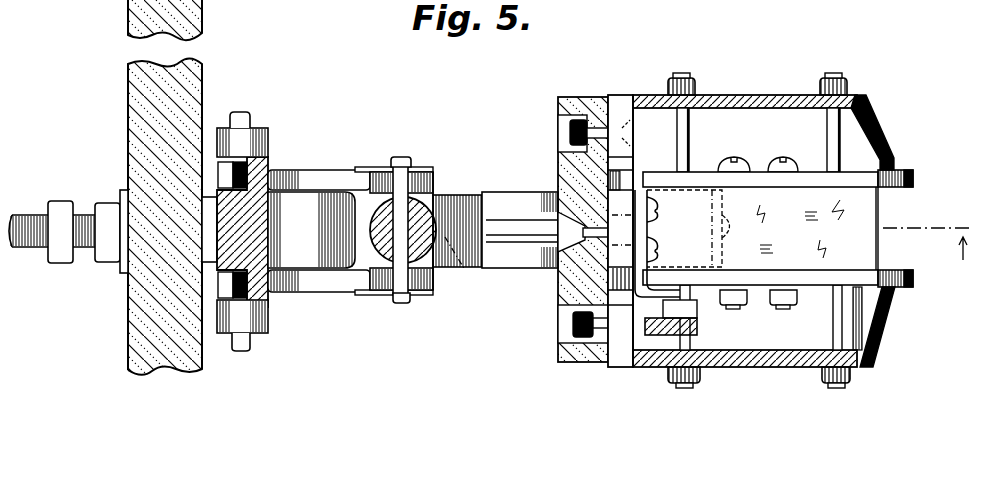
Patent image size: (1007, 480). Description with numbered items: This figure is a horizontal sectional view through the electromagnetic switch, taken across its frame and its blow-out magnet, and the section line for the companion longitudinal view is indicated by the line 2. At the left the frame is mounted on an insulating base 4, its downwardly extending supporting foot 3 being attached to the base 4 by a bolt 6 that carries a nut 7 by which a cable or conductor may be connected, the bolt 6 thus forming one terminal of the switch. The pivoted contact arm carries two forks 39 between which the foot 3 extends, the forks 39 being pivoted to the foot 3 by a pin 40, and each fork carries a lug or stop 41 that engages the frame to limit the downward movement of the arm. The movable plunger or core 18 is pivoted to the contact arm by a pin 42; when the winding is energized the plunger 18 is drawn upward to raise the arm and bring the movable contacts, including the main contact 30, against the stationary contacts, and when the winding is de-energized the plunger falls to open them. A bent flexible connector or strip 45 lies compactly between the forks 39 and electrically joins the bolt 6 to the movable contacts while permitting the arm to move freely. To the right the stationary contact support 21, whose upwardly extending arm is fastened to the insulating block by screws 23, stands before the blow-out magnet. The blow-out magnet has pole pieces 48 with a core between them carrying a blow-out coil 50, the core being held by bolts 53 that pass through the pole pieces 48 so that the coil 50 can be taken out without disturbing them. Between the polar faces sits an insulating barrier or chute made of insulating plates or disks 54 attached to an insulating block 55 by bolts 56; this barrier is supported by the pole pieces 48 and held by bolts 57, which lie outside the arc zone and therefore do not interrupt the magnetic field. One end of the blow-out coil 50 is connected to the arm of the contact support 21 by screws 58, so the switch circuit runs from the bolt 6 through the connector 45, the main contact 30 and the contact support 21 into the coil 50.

The supporting feet 2 is at (935, 240).
The supporting foot 3 is at (242, 230).
The insulating base 4 is at (165, 187).
The bolt 6 is at (25, 220).
The nut 7 is at (60, 202).
The movable plunger or core 18 is at (378, 213).
The contact support 21 is at (508, 228).
The screws 23 is at (560, 221).
The main contact or brush 30 is at (460, 188).
The forks 39 is at (330, 161).
The pin 40 is at (253, 115).
The lug or stop 41 is at (217, 177).
The pin 42 is at (398, 301).
The flexible connector or strip 45 is at (311, 230).
The pole pieces 48 is at (722, 379).
The blow-out coil 50 is at (702, 331).
The bolts 53 is at (740, 1).
The insulating plates or disks 54 is at (893, 188).
The insulating block 55 is at (760, 228).
The bolts 56 is at (778, 158).
The bolts 57 is at (683, 63).
The screws 58 is at (658, 250).